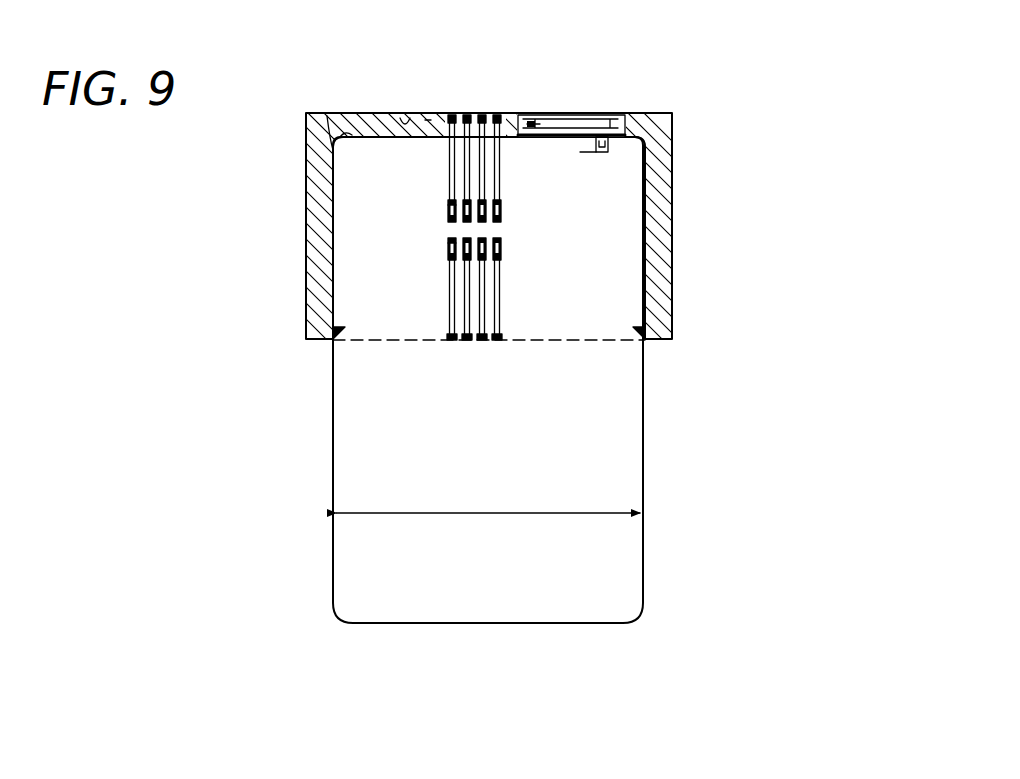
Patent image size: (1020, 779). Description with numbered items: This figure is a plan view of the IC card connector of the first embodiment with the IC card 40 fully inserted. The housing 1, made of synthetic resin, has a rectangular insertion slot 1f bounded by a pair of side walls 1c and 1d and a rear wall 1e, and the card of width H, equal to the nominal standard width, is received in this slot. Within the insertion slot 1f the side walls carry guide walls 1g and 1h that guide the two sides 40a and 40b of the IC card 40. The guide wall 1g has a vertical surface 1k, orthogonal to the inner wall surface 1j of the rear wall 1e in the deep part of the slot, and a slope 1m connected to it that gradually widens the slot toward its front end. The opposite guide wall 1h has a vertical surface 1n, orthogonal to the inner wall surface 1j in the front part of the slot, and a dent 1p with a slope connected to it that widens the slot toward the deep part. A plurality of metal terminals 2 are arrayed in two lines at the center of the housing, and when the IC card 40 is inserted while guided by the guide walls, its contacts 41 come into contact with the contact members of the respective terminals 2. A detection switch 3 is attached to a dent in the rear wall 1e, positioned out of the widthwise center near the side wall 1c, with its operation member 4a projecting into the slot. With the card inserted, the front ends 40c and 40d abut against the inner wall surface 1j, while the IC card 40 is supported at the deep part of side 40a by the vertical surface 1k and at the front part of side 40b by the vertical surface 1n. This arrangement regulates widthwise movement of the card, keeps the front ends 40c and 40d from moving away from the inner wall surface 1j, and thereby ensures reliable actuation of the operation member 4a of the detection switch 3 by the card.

The housing 1 is at (378, 106).
The side wall 1c is at (672, 210).
The side wall 1d is at (305, 258).
The rear wall 1e is at (428, 118).
The insertion slot 1f is at (327, 116).
The guide wall 1g is at (642, 226).
The guide wall 1h is at (340, 248).
The inner wall surface 1j is at (405, 118).
The vertical surface 1k is at (640, 173).
The slope 1m is at (647, 290).
The vertical surface 1n is at (338, 305).
The dent 1p is at (338, 170).
The terminals 2 is at (501, 176).
The detection switch 3 is at (558, 110).
The operation member 4a is at (590, 155).
The IC card 40 is at (633, 604).
The side 40a is at (645, 478).
The side 40b is at (330, 462).
The front end 40c is at (650, 155).
The front end 40d is at (352, 118).
The contacts 41 is at (448, 245).
The width H is at (488, 499).